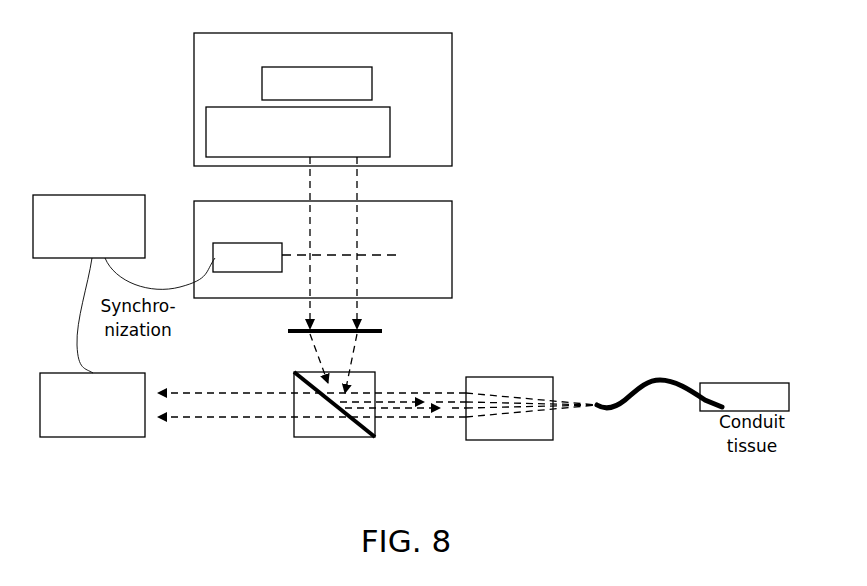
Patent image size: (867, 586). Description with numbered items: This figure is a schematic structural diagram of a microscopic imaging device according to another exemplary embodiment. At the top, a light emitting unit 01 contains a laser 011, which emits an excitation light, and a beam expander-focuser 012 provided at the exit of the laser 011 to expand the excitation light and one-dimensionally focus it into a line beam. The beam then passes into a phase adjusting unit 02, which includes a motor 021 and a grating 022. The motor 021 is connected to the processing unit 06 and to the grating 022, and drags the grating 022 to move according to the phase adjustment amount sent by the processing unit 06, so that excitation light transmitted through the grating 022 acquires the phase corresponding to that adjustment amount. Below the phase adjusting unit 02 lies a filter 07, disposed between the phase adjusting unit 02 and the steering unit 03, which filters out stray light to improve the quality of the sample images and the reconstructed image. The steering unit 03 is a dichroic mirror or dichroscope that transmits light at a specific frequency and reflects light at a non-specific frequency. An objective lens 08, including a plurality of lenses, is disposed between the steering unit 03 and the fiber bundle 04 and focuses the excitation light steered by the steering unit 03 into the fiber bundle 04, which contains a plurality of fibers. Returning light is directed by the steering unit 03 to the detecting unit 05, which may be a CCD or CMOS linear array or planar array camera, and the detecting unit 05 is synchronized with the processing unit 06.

The light emitting unit 01 is at (452, 100).
The laser 011 is at (372, 81).
The beam expander-focuser 012 is at (390, 128).
The phase adjusting unit 02 is at (452, 243).
The motor 021 is at (245, 243).
The grating 022 is at (367, 254).
The filter 07 is at (382, 329).
The steering unit 03 is at (375, 372).
The objective lens 08 is at (512, 377).
The fiber bundle 04 is at (648, 377).
The detecting unit 05 is at (93, 373).
The processing unit 06 is at (90, 195).